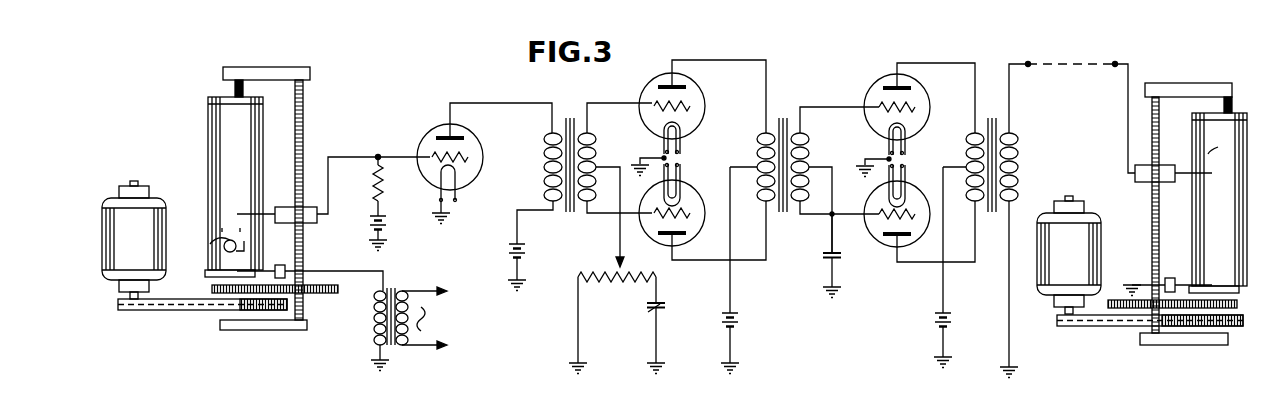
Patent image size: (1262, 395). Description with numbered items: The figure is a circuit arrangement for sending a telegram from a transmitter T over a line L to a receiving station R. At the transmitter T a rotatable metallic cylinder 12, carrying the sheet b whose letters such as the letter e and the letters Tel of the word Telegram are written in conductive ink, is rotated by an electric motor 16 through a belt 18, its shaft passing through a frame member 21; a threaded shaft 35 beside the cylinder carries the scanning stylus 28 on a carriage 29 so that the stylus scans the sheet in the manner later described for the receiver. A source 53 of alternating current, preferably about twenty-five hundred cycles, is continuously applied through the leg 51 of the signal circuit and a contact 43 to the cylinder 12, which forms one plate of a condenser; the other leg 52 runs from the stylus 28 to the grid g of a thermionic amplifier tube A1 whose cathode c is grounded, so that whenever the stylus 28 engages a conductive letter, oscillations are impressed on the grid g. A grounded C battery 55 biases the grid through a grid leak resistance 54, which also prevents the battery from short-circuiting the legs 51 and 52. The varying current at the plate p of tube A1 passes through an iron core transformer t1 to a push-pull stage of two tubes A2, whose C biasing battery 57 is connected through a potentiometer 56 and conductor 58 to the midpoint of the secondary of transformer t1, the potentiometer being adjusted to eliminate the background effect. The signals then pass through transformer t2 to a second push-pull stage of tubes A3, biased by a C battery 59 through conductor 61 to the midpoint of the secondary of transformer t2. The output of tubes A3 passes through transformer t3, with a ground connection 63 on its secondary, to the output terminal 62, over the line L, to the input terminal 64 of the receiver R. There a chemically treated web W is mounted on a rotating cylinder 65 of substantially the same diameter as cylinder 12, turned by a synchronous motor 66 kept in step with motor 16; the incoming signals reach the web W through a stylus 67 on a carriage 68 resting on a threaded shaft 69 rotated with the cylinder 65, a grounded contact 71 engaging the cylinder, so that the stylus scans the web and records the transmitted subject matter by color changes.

The transmitter T is at (221, 195).
The rotatable metallic cylinder 12 is at (225, 101).
The sheet b is at (219, 183).
The feed screw 35 is at (305, 120).
The scanning electrode 28 is at (268, 208).
The reproducer 29 is at (290, 224).
The groove element e is at (228, 241).
The contact member 43 is at (277, 267).
The electric motor 16 is at (134, 240).
The belt 18 is at (160, 309).
The frame member 21 is at (258, 332).
The leg of the signal circuit 51 is at (345, 258).
The leg of the signal circuit 52 is at (357, 138).
The source of alternating current 53 is at (378, 310).
The grid leak resistance 54 is at (372, 186).
The C battery 55 is at (379, 226).
The thermionic amplifier tube A1 is at (475, 163).
The plate p is at (437, 137).
The grid g is at (434, 158).
The cathode c is at (440, 179).
The iron core transformer t1 is at (577, 93).
The push pull amplifier tubes A2 is at (701, 92).
The conductor 58 is at (620, 233).
The potentiometer 56 is at (617, 280).
The C biasing battery 57 is at (664, 304).
The transformer t2 is at (789, 113).
The conductor 61 is at (832, 228).
The C battery 59 is at (841, 256).
The push pull amplifier tubes A3 is at (926, 102).
The transformer t3 is at (999, 107).
The ground conductor 63 is at (1008, 295).
The line L is at (1053, 64).
The output terminal 62 is at (1031, 68).
The input terminal 64 is at (1114, 69).
The receiving station R is at (1142, 193).
The rotating cylinder 65 is at (1200, 122).
The web W is at (1205, 202).
The telegraphone record Tel is at (1223, 144).
The carriage 68 is at (1150, 175).
The stylus 67 is at (1184, 178).
The threaded shaft 69 is at (1151, 230).
The ground contact 71 is at (1133, 283).
The alternating current synchronous motor 66 is at (1069, 255).